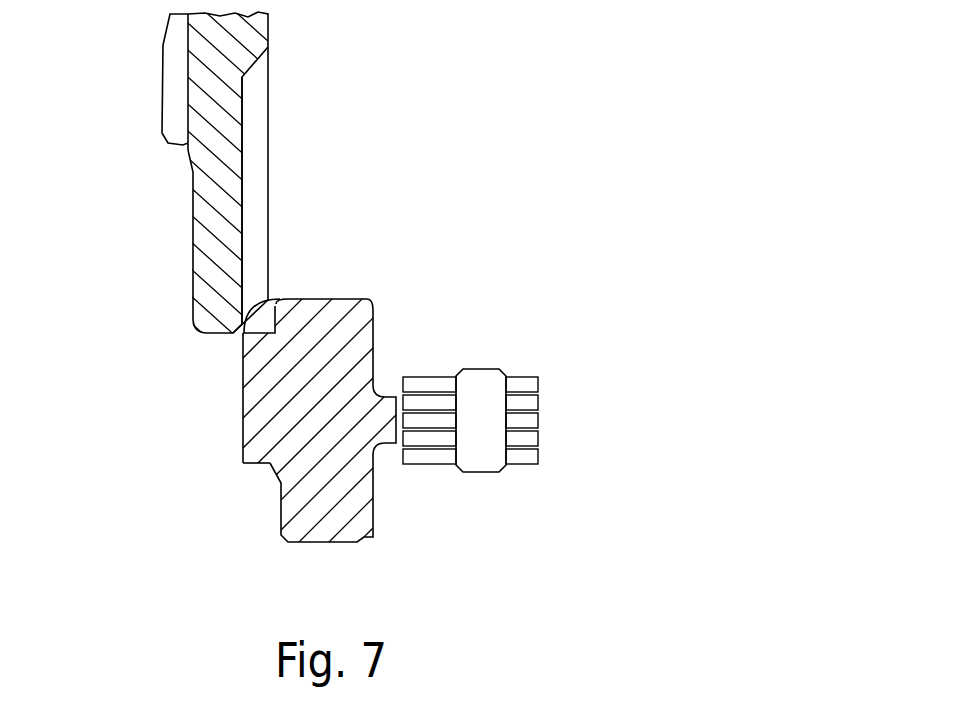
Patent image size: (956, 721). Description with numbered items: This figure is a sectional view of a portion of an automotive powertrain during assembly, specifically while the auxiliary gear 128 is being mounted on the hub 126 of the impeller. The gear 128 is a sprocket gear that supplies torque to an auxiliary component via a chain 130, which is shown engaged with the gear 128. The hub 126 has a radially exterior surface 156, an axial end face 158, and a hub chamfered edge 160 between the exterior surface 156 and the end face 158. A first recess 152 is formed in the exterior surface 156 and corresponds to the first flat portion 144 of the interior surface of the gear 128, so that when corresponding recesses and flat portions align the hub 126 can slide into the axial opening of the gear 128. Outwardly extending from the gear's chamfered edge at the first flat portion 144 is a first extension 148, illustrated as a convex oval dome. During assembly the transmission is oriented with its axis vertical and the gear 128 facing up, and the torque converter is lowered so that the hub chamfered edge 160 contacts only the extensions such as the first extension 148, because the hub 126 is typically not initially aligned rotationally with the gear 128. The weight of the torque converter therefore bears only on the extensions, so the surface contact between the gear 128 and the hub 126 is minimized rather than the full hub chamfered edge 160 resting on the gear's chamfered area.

The hub 126 is at (205, 205).
The first recess 152 is at (255, 110).
The radially exterior surface 156 is at (268, 190).
The axial end face 158 is at (213, 340).
The hub chamfered edge 160 is at (238, 337).
The first extension 148 is at (276, 315).
The first flat portion 144 is at (243, 445).
The auxiliary gear 128 is at (358, 498).
The chain 130 is at (482, 388).